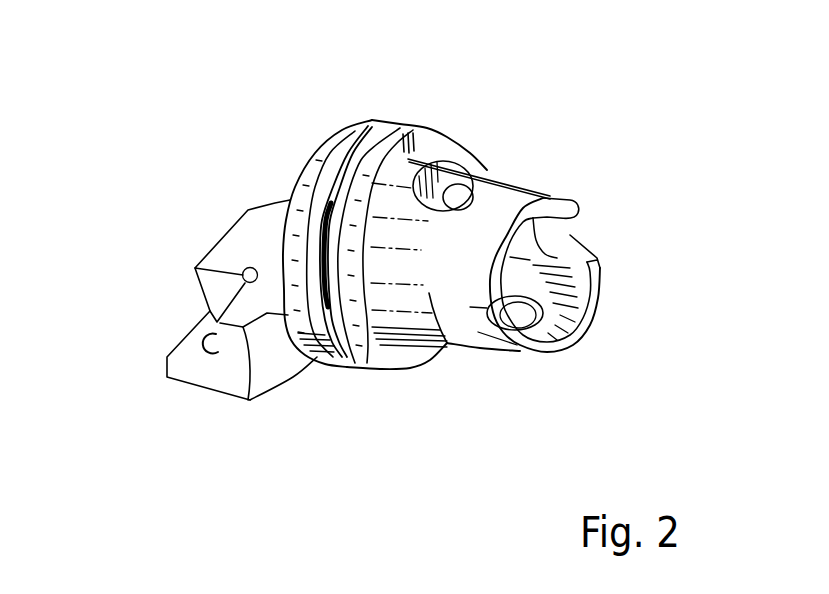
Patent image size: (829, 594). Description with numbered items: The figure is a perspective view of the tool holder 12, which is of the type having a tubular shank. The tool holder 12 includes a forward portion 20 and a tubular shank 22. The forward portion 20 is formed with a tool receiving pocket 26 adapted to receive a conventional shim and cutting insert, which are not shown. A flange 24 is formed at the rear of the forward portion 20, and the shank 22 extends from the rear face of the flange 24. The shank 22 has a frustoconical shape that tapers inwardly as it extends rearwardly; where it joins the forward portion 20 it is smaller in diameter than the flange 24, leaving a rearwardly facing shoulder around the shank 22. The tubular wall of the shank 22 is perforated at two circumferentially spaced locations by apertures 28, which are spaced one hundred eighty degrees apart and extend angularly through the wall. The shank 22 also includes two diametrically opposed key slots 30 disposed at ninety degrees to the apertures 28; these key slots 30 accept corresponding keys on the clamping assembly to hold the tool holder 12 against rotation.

The tool holder 12 is at (483, 121).
The forward portion 20 is at (272, 197).
The tubular shank 22 is at (447, 345).
The flange 24 is at (367, 337).
The tool receiving pocket 26 is at (210, 287).
The apertures 28 is at (473, 178).
The key slots 30 is at (571, 237).